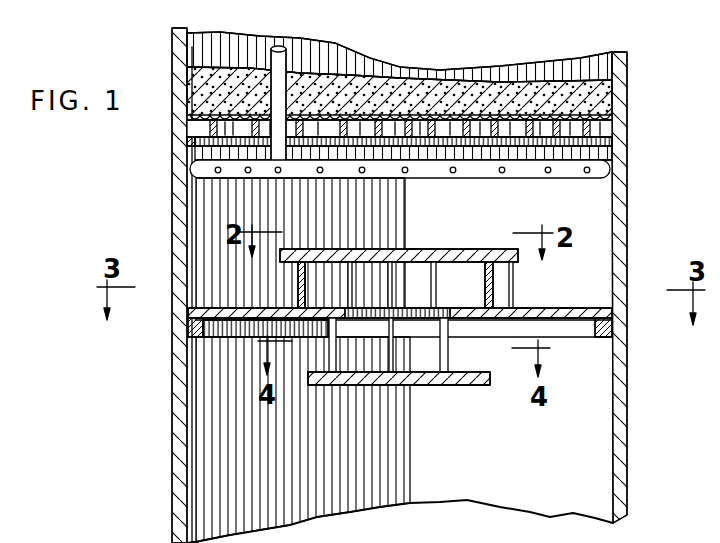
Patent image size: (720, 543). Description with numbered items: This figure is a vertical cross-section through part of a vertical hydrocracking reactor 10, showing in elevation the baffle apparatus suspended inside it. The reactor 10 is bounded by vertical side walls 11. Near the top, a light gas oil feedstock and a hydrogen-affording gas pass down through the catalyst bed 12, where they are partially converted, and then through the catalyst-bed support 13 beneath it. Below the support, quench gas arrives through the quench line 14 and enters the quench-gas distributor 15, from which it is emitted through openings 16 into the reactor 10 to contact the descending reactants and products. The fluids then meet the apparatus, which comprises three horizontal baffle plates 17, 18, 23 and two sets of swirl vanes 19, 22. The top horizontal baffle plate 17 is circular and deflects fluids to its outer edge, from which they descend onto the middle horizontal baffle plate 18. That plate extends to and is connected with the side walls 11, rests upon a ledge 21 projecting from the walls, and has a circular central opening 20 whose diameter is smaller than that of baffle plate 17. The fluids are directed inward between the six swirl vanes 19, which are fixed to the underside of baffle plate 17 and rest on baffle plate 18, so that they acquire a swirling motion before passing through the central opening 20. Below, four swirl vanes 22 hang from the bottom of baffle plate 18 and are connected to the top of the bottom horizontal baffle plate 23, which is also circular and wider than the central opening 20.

The reactor 10 is at (633, 152).
The vertical side walls 11 is at (178, 470).
The catalyst bed 12 is at (388, 92).
The catalyst-bed support 13 is at (476, 112).
The quench line 14 is at (275, 68).
The quench-gas distributor 15 is at (343, 180).
The openings 16 is at (249, 174).
The horizontal baffle plate 17 is at (337, 236).
The horizontal baffle plate 18 is at (550, 313).
The swirl vanes 19 is at (302, 285).
The circular central opening 20 is at (378, 322).
The ledge 21 is at (197, 333).
The swirl vanes 22 is at (345, 365).
The horizontal baffle plate 23 is at (373, 386).